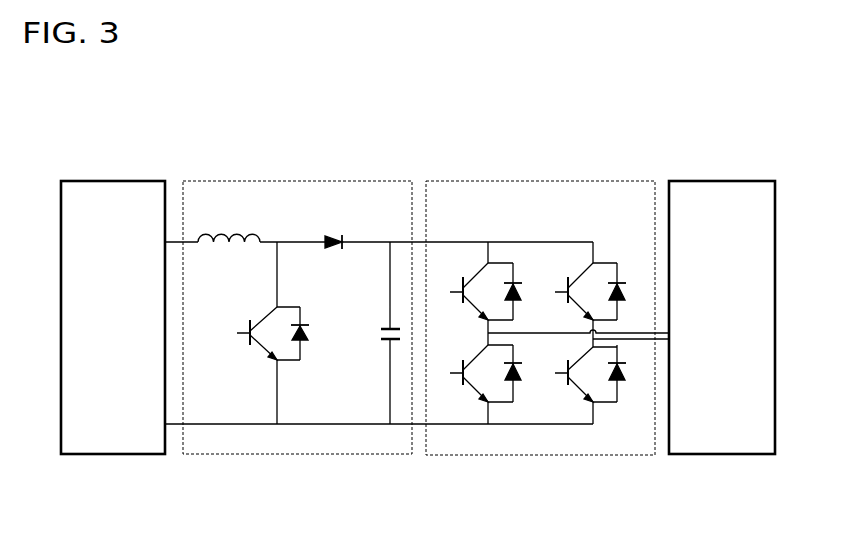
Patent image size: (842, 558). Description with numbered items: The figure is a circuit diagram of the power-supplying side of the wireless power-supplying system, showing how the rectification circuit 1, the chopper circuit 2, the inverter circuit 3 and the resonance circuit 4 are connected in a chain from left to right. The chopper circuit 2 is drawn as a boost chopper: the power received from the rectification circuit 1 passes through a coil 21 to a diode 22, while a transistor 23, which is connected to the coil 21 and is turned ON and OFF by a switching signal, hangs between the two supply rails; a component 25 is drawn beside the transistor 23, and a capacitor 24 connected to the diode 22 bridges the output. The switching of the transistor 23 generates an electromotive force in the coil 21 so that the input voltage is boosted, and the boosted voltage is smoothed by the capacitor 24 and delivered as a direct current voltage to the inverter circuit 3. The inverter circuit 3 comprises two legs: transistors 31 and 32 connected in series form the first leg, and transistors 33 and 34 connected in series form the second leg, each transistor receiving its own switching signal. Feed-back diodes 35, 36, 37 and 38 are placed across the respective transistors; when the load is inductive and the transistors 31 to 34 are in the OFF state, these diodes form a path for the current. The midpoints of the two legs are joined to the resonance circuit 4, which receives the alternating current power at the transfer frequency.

The rectification circuit 1 is at (112, 180).
The chopper circuit 2 is at (300, 180).
The inverter circuit 3 is at (546, 180).
The resonance circuit 4 is at (720, 180).
The coil 21 is at (226, 246).
The diode 22 is at (332, 250).
The transistor (switching element) 23 is at (260, 346).
The capacitor 24 is at (382, 345).
The diode 25 is at (309, 335).
The transistor 31 is at (473, 304).
The transistor 32 is at (474, 386).
The transistor 33 is at (578, 304).
The transistor 34 is at (579, 386).
The feed-back diode 35 is at (522, 288).
The feed-back diode 36 is at (516, 378).
The feed-back diode 37 is at (626, 293).
The feed-back diode 38 is at (625, 382).